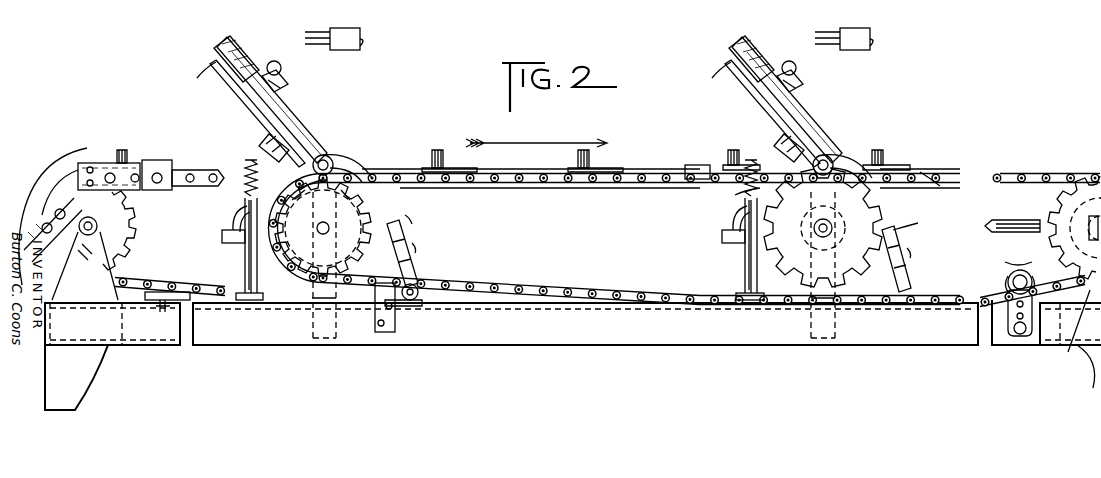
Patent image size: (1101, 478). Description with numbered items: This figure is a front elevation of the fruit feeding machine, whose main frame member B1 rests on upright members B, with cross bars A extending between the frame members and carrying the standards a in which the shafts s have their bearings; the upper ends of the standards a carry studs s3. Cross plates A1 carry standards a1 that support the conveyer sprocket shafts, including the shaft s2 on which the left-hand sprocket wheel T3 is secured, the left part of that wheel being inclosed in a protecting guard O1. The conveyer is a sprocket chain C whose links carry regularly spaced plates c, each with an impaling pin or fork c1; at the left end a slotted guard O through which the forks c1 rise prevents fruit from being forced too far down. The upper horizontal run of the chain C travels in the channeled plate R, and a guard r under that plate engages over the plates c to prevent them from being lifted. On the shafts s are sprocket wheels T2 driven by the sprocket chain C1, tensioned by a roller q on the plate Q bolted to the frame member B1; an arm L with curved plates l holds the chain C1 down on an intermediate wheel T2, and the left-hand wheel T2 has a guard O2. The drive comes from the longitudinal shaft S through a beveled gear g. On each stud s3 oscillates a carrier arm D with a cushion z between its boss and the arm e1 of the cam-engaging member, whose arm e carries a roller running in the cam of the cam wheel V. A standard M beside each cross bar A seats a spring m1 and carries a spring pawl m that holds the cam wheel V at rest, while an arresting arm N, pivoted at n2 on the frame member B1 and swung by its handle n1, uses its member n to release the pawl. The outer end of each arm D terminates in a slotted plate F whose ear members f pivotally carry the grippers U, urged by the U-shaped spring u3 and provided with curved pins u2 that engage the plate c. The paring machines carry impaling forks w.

The cross bar A is at (804, 352).
The cross plate A1 is at (125, 327).
The upright member B is at (570, 377).
The main frame member B1 is at (215, 338).
The channeled plate R is at (566, 189).
The sprocket chain C1 is at (528, 286).
The sprocket chain C is at (186, 282).
The plate c is at (900, 165).
The impaling pin or fork c1 is at (880, 148).
The sprocket wheel T2 is at (888, 222).
The sprocket wheel T3 is at (136, 226).
The shaft s is at (815, 230).
The shaft s2 is at (97, 226).
The stud s3 is at (832, 160).
The arm e is at (597, 165).
The arm e1 is at (300, 192).
The cam wheel V is at (800, 265).
The standard a is at (811, 298).
The arm L is at (823, 228).
The standard M is at (745, 282).
The spring pawl m is at (730, 210).
The spring m1 is at (748, 158).
The carrier arm D is at (788, 102).
The centering finger or gripper U is at (755, 52).
The plate F is at (736, 88).
The pin u2 is at (713, 64).
The U-shaped spring u3 is at (785, 62).
The ear member f is at (811, 90).
The rubber cushion z is at (778, 142).
The protecting guard O1 is at (57, 166).
The slotted guard O is at (105, 165).
The guard O2 is at (428, 224).
The standard a1 is at (571, 302).
The guard r is at (683, 165).
The curved plate l is at (912, 174).
The member n is at (884, 258).
The operating handle n1 is at (916, 268).
The arresting arm N is at (665, 281).
The pivot n2 is at (420, 300).
The impaling pin or fork w is at (866, 60).
The beveled gear g is at (1086, 174).
The shaft S is at (1010, 222).
The roller q is at (1006, 278).
The plate Q is at (1012, 348).